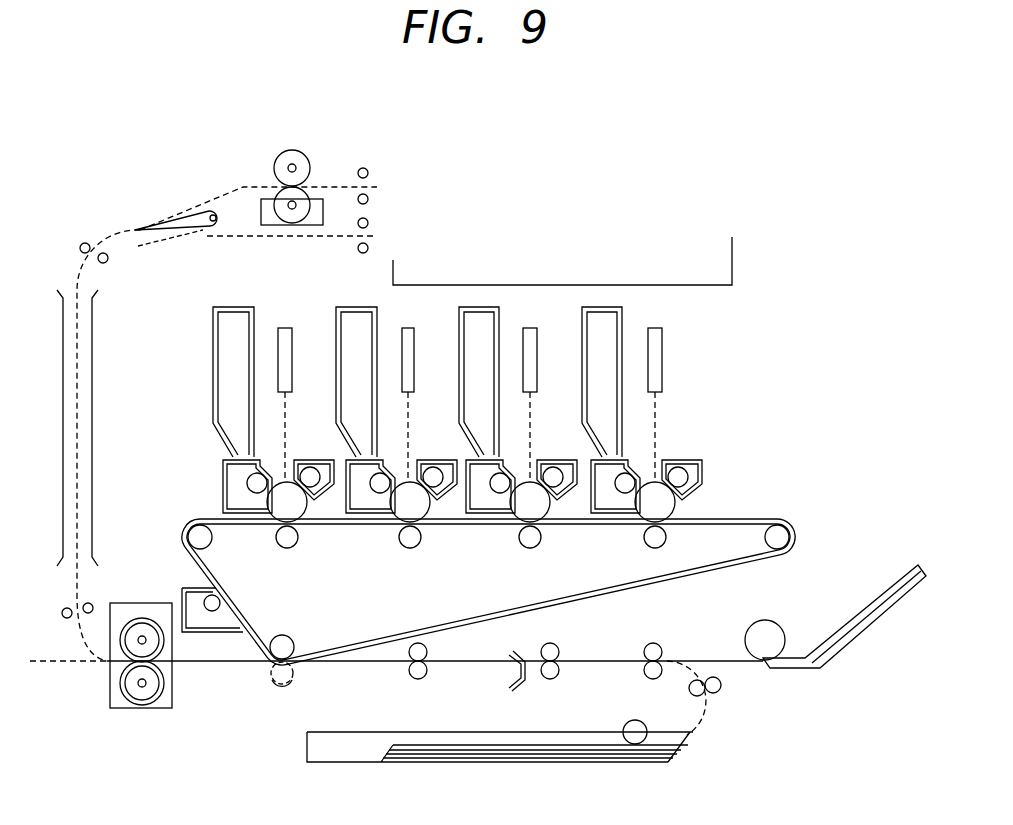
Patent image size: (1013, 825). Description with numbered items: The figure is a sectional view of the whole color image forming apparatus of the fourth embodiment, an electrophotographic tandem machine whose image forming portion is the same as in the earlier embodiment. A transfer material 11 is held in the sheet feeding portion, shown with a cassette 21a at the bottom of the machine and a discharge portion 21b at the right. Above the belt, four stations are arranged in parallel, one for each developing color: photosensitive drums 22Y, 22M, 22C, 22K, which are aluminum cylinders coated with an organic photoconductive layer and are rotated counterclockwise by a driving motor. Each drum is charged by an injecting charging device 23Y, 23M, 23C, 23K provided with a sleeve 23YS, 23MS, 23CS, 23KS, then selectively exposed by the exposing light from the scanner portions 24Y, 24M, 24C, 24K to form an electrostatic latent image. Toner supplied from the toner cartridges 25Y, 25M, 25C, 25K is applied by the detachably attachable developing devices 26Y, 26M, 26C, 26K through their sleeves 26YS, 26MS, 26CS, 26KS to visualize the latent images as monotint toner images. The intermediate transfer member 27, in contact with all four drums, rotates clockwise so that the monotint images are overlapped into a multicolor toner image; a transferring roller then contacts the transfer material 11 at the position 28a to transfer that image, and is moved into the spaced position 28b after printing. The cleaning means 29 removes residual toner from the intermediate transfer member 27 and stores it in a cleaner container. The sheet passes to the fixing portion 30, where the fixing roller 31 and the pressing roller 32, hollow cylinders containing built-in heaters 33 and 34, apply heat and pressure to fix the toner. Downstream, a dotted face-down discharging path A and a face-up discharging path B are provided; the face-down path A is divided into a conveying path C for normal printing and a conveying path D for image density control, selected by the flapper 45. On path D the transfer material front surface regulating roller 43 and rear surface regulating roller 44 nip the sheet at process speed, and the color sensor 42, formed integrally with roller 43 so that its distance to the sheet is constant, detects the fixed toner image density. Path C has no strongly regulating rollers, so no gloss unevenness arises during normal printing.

The transfer material 11 is at (490, 735).
The sheet feeding cassette 21a is at (575, 745).
The sheet discharge tray 21b is at (888, 590).
The photosensitive drum 22Y is at (282, 515).
The photosensitive drum 22M is at (407, 520).
The photosensitive drum 22C is at (514, 517).
The photosensitive drum 22K is at (658, 493).
The injecting charging device 23Y is at (310, 460).
The injecting charging device 23M is at (432, 460).
The injecting charging device 23C is at (553, 460).
The injecting charging device 23K is at (700, 458).
The sleeve 23YS is at (308, 500).
The sleeve 23MS is at (433, 505).
The sleeve 23CS is at (560, 500).
The sleeve 23KS is at (690, 478).
The scanner portion 24Y is at (284, 328).
The scanner portion 24M is at (407, 328).
The scanner portion 24C is at (530, 328).
The scanner portion 24K is at (655, 328).
The toner cartridge 25Y is at (212, 316).
The toner cartridge 25M is at (357, 307).
The toner cartridge 25C is at (478, 307).
The toner cartridge 25K is at (603, 307).
The developing device 26Y is at (223, 500).
The developing device 26M is at (345, 505).
The developing device 26C is at (465, 505).
The developing device 26K is at (590, 500).
The sleeve 26YS is at (250, 480).
The sleeve 26MS is at (377, 500).
The sleeve 26CS is at (500, 493).
The sleeve 26KS is at (628, 500).
The intermediate transfer member 27 is at (380, 632).
The position of transferring roller 28a is at (296, 669).
The position of transferring roller 28b is at (288, 688).
The cleaning means 29 is at (233, 633).
The fixing portion 30 is at (173, 693).
The fixing roller 31 is at (145, 619).
The pressing roller 32 is at (156, 699).
The heater 33 is at (139, 637).
The heater 34 is at (142, 686).
The color sensor 42 is at (263, 226).
The transfer material front surface regulating roller 43 is at (310, 226).
The transfer material rear surface regulating roller 44 is at (310, 155).
The flapper 45 is at (157, 225).
The face-down discharging path A is at (80, 638).
The face-up discharging path B is at (64, 665).
The transfer material conveying path C is at (208, 240).
The transfer material conveying path D is at (225, 190).